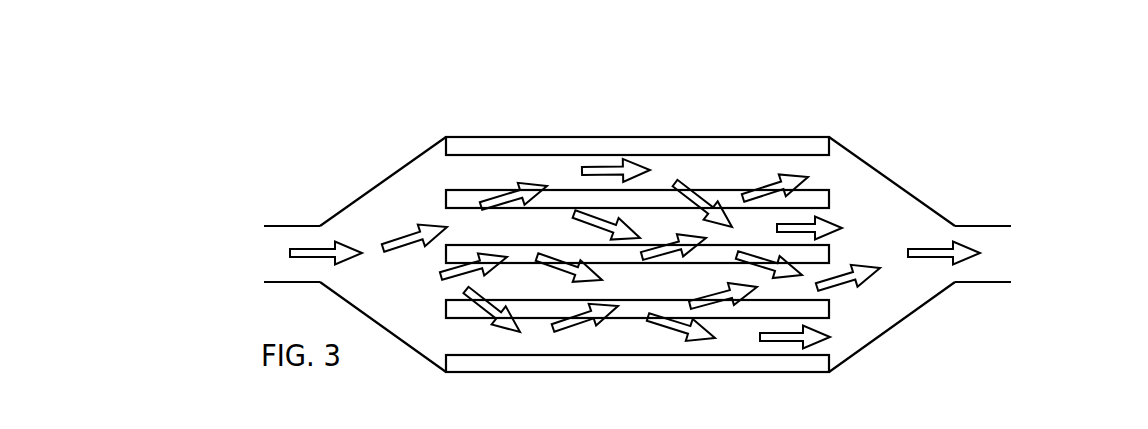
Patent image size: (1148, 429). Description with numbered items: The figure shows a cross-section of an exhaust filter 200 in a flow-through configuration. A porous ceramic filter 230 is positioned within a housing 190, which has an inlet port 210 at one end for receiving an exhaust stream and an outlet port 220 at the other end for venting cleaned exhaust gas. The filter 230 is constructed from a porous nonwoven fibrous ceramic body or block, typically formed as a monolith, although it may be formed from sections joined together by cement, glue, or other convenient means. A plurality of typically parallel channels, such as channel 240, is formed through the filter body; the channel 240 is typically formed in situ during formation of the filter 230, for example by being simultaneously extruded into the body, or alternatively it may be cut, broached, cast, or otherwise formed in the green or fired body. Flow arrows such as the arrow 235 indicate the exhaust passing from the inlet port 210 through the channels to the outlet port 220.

The exhaust filter 200 is at (921, 95).
The housing 190 is at (417, 155).
The inlet port 210 is at (287, 226).
The outlet port 220 is at (984, 226).
The porous ceramic filter 230 is at (465, 197).
The channel 240 is at (545, 162).
The transverse flow arrow 235 is at (695, 190).